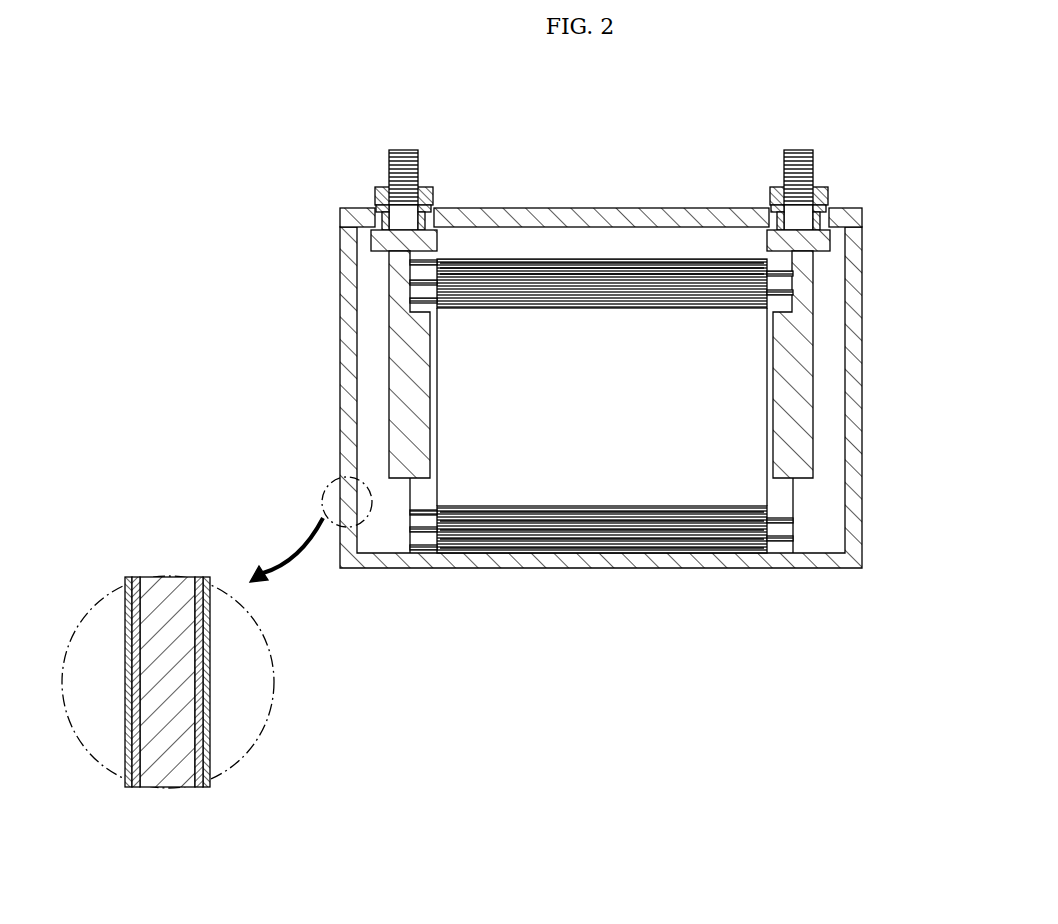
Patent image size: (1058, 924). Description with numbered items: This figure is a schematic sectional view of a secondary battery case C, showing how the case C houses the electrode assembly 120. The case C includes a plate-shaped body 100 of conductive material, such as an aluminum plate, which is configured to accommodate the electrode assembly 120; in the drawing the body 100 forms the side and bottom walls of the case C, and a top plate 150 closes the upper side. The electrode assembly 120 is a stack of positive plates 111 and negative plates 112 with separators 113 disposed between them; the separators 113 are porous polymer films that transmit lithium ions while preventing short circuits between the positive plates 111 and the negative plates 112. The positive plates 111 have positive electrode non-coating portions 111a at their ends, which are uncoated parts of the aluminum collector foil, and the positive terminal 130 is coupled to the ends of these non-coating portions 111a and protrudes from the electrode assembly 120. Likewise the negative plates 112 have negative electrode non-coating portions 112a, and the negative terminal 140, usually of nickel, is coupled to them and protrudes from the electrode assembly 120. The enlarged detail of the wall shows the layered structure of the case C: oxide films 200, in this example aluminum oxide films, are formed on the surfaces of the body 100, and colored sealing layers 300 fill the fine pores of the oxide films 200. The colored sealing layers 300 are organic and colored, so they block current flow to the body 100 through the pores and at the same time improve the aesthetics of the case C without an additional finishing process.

The body 100 is at (166, 590).
The positive plates 111 is at (607, 553).
The positive electrode non-coating portions 111a is at (423, 555).
The negative plates 112 is at (490, 553).
The negative electrode non-coating portions 112a is at (782, 541).
The separators 113 is at (567, 553).
The electrode assembly 120 is at (666, 500).
The positive terminal 130 is at (403, 150).
The negative terminal 140 is at (798, 150).
The cap plate 150 is at (572, 208).
The oxide films 200 is at (130, 690).
The colored sealing layers 300 is at (135, 645).
The case C is at (862, 378).